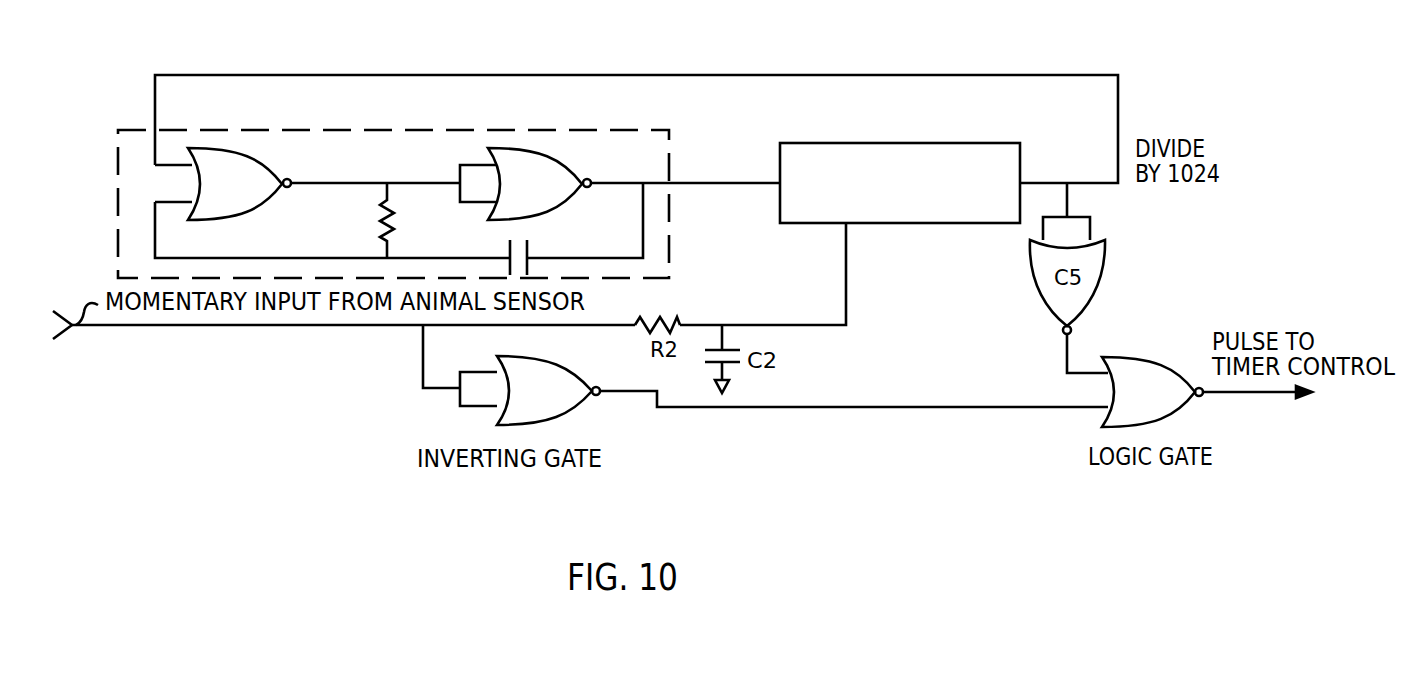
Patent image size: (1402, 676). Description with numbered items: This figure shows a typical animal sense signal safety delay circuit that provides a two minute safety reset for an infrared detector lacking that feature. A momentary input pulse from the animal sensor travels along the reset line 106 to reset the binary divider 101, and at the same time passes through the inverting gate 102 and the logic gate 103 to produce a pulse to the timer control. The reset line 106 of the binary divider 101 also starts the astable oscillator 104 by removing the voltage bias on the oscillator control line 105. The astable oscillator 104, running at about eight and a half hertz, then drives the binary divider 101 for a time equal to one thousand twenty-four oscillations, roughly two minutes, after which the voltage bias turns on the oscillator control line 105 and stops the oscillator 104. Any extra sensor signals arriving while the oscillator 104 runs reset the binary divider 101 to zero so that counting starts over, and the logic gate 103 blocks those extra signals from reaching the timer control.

The binary divider 101 is at (955, 143).
The inverting gate 102 is at (575, 371).
The logic gate 103 is at (1150, 357).
The astable oscillator 104 is at (636, 130).
The oscillator control line 105 is at (800, 75).
The reset line 106 is at (846, 290).